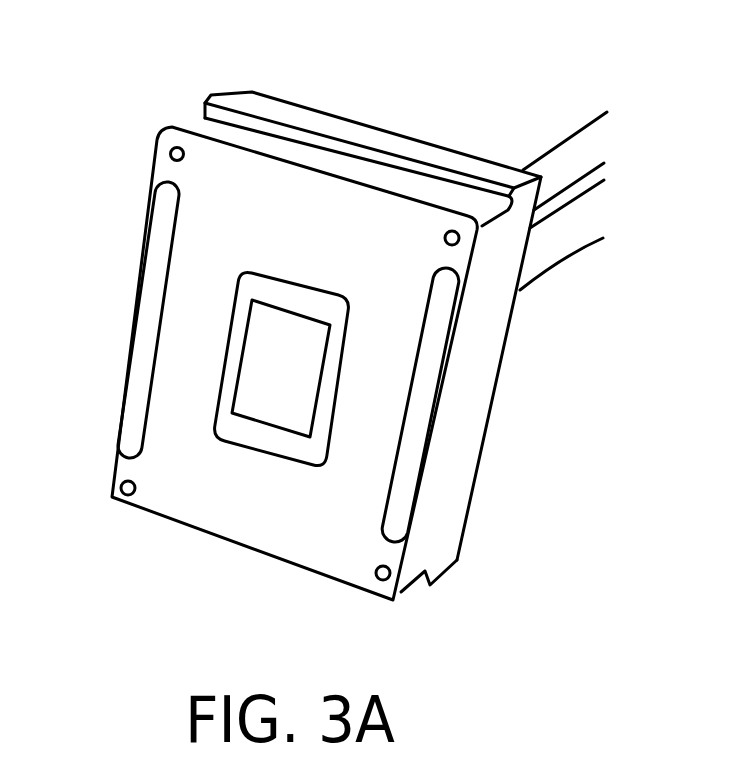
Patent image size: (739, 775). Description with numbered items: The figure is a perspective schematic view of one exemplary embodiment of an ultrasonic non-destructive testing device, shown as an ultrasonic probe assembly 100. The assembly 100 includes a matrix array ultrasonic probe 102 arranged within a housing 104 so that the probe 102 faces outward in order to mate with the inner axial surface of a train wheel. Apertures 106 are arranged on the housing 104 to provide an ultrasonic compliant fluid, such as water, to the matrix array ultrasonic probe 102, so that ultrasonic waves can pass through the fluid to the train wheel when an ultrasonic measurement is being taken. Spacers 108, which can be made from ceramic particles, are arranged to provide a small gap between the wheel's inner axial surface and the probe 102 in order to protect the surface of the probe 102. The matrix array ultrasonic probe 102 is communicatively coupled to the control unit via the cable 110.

The ultrasonic probe assembly 100 is at (139, 76).
The matrix array ultrasonic probe 102 is at (262, 422).
The housing 104 is at (263, 182).
The apertures 106 is at (165, 147).
The spacers 108 is at (143, 268).
The cable 110 is at (563, 163).